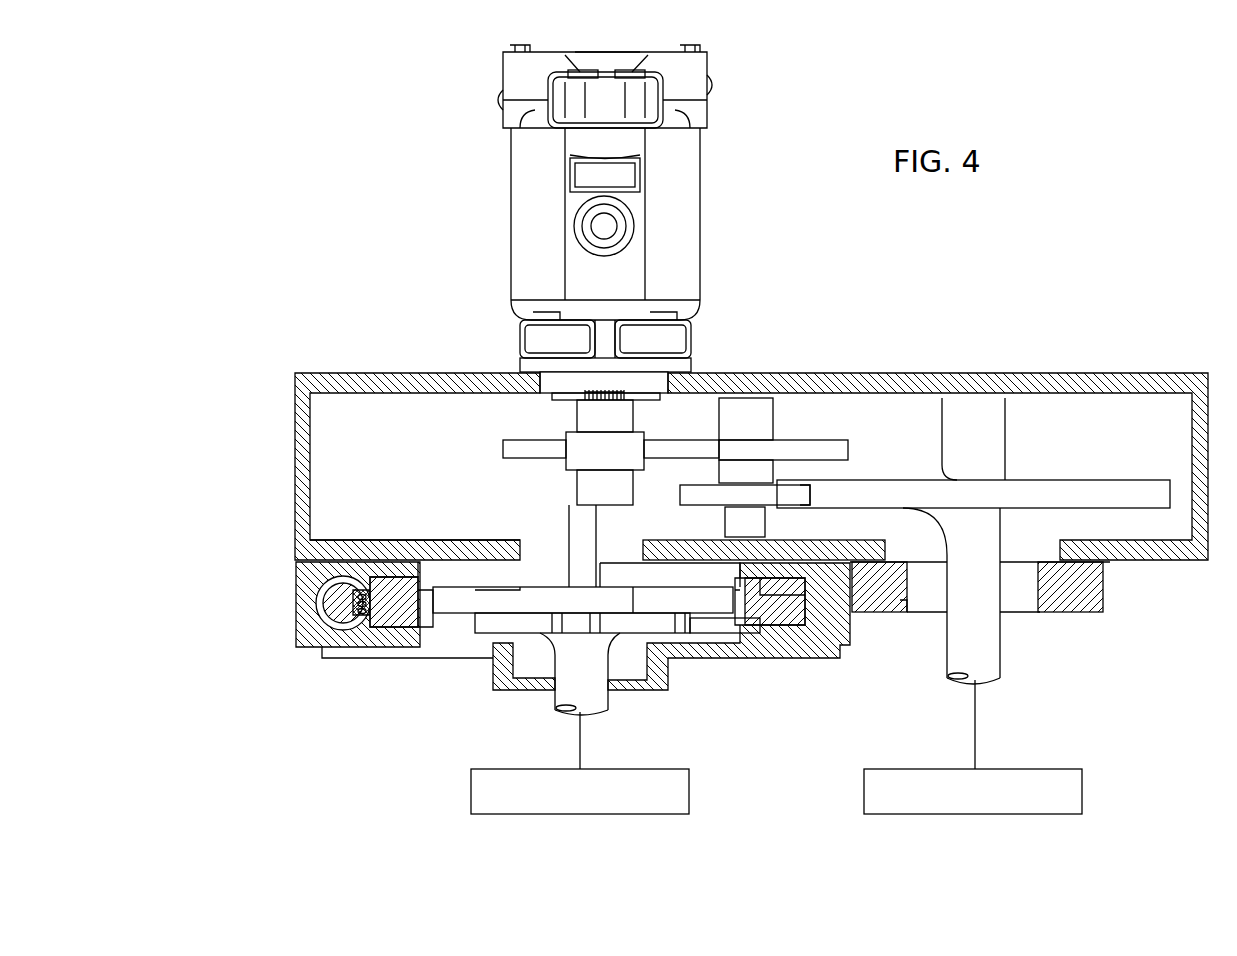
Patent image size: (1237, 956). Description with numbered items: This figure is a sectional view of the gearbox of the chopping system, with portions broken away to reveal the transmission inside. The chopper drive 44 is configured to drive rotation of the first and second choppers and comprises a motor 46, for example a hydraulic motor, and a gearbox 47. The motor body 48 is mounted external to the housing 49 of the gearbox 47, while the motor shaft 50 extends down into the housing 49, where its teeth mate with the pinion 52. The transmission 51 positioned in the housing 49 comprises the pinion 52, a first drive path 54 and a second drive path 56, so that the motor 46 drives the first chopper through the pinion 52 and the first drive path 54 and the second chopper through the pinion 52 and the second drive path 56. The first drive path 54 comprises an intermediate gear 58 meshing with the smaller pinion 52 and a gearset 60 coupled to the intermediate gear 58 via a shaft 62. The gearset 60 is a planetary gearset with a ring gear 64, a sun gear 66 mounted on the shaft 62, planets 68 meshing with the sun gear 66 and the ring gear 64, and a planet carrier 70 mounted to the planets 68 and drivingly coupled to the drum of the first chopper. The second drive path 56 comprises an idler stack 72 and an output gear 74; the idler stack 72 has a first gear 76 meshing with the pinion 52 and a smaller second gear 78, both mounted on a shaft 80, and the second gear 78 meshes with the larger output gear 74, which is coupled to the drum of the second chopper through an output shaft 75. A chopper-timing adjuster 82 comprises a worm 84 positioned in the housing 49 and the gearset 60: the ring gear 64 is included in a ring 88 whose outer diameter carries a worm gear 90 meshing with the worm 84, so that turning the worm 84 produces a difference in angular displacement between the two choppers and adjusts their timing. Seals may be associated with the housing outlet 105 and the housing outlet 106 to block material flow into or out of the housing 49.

The chopper drive 44 is at (308, 143).
The motor 46 is at (715, 183).
The gearbox 47 is at (890, 352).
The motor body 48 is at (668, 248).
The housing 49 is at (1030, 372).
The shaft 50 is at (602, 393).
The transmission 51 is at (380, 462).
The pinion 52 is at (617, 447).
The first drive path 54 is at (548, 522).
The second drive path 56 is at (1020, 464).
The intermediate gear 58 is at (503, 450).
The gearset 60 is at (712, 630).
The shaft 62 is at (585, 548).
The ring gear 64 is at (425, 607).
The sun gear 66 is at (625, 590).
The planets 68 is at (540, 605).
The planet carrier 70 is at (664, 625).
The idler stack 72 is at (758, 420).
The output gear 74 is at (1058, 493).
The output shaft 75 is at (978, 645).
The first gear 76 is at (843, 452).
The second gear 78 is at (800, 492).
The shaft 80 is at (765, 474).
The chopper-timing adjuster 82 is at (432, 577).
The worm 84 is at (330, 590).
The ring 88 is at (390, 600).
The worm gear 90 is at (355, 612).
The housing outlet 105 is at (595, 710).
The housing outlet 106 is at (915, 602).